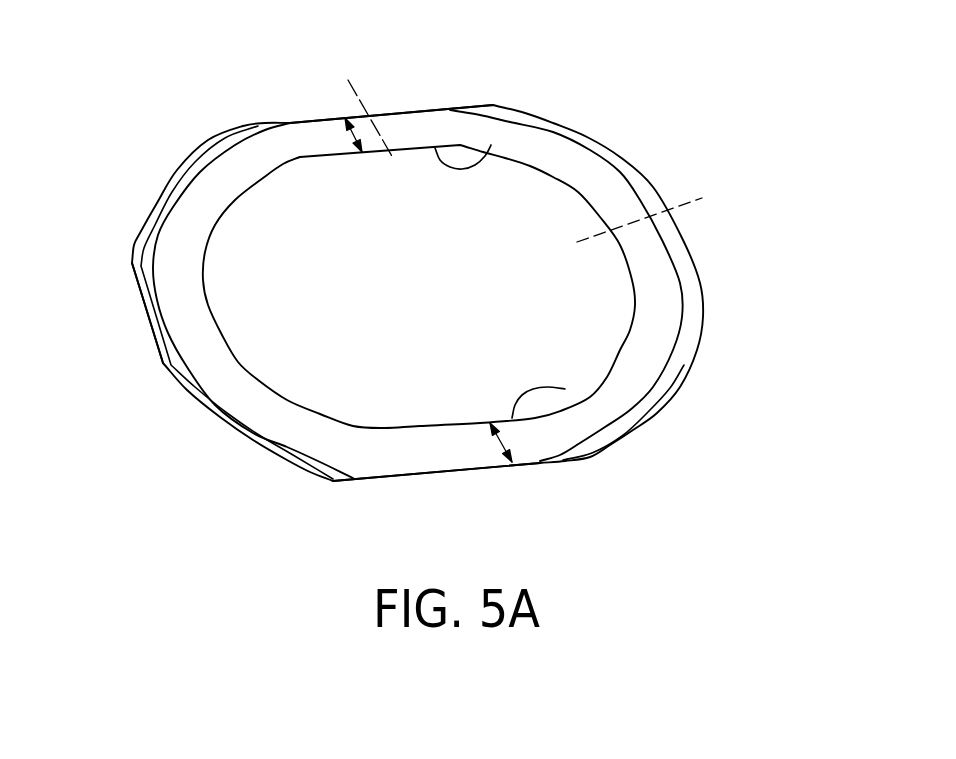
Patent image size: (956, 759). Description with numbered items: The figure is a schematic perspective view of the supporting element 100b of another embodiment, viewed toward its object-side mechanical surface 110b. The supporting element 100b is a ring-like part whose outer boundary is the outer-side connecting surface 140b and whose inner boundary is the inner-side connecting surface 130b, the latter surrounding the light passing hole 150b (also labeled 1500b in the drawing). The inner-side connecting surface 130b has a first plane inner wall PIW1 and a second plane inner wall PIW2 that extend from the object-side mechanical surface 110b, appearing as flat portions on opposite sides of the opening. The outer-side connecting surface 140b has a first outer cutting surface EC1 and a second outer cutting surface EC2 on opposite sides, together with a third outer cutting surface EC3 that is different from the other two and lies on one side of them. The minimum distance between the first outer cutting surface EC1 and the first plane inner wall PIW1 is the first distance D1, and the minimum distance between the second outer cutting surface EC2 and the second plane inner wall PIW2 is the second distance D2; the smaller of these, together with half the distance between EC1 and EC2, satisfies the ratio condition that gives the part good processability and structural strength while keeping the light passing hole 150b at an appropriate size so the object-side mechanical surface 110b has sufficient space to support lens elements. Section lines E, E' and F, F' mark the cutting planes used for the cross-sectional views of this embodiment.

The supporting element 100b is at (449, 288).
The object-side mechanical surface 110b is at (428, 126).
The inner-side connecting surface 130b is at (234, 340).
The outer-side connecting surface 140b is at (708, 306).
The hidden inner component 1500b is at (656, 155).
The light passing hole 150b is at (526, 204).
The first plane inner wall PIW1 is at (491, 145).
The second plane inner wall PIW2 is at (565, 389).
The first distance D1 is at (361, 137).
The second distance D2 is at (503, 437).
The first outer cutting surface EC1 is at (311, 122).
The second outer cutting surface EC2 is at (439, 475).
The third outer cutting surface EC3 is at (140, 329).
The section line E is at (370, 99).
The section line E' is at (416, 176).
The section line F is at (622, 231).
The section line F' is at (706, 179).